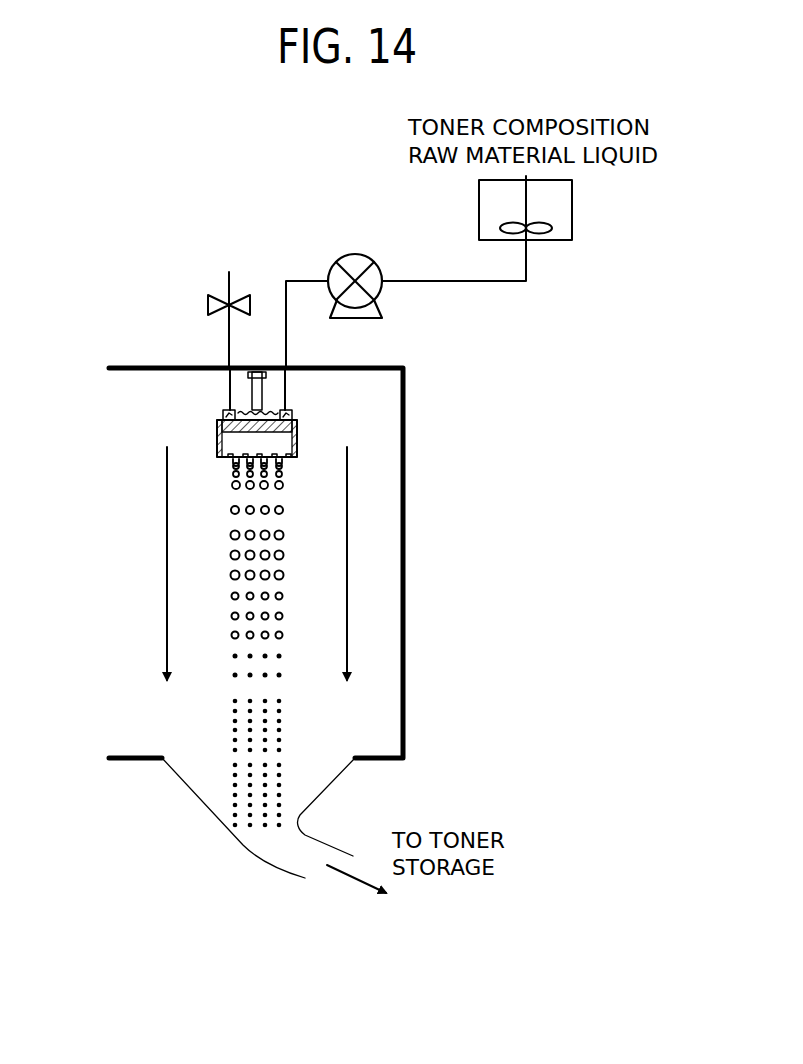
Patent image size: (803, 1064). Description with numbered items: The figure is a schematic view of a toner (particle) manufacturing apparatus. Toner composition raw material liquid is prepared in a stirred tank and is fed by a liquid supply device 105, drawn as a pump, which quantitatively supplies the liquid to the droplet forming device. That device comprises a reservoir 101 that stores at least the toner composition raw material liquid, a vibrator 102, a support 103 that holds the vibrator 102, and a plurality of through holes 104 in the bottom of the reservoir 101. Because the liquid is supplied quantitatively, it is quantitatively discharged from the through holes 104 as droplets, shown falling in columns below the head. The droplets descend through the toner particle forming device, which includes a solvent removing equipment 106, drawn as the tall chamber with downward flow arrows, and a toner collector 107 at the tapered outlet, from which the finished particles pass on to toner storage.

The reservoir 101 is at (228, 440).
The vibrator 102 is at (233, 410).
The support 103 is at (263, 388).
The through holes 104 is at (288, 458).
The liquid supply device 105 is at (373, 318).
The solvent removing equipment 106 is at (108, 515).
The toner collector 107 is at (192, 798).